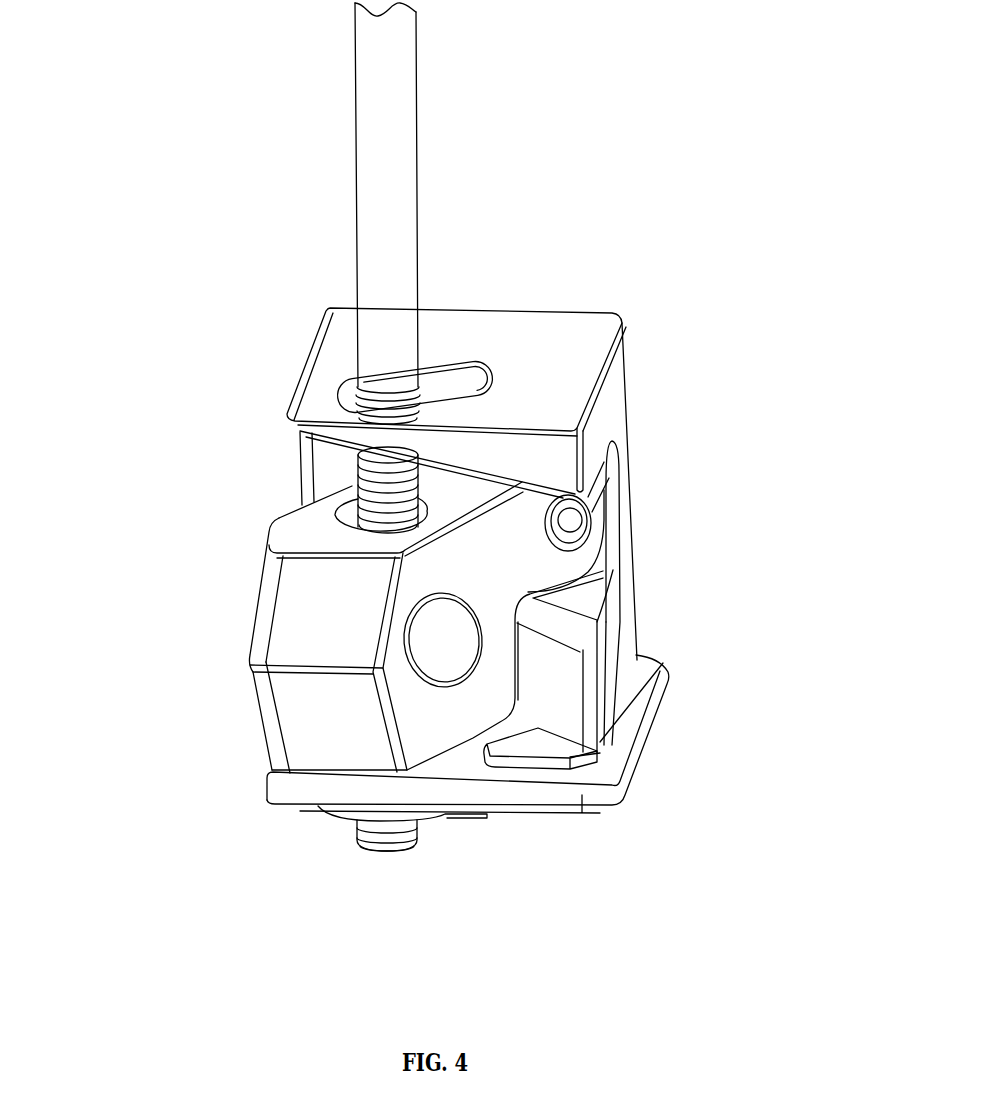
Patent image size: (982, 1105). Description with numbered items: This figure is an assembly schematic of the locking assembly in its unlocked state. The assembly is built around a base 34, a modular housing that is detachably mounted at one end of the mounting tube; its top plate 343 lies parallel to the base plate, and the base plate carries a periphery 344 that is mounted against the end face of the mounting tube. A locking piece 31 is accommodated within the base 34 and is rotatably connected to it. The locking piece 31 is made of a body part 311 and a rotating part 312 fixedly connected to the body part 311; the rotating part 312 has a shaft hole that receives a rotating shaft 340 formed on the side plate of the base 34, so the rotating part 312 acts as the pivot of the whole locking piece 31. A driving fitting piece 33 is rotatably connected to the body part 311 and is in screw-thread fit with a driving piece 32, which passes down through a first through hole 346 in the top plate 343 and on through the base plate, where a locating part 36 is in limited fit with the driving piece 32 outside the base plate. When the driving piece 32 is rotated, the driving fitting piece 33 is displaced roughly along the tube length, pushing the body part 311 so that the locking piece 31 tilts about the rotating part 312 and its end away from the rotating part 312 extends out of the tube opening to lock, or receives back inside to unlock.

The locking piece 31 is at (322, 577).
The body part 311 is at (430, 717).
The rotating part 312 is at (577, 556).
The driving piece 32 is at (388, 131).
The driving fitting piece 33 is at (432, 643).
The base 34 is at (552, 385).
The rotating shaft 340 is at (570, 513).
The top plate 343 is at (318, 402).
The periphery 344 is at (625, 720).
The first through hole 346 is at (448, 390).
The locating part 36 is at (397, 815).